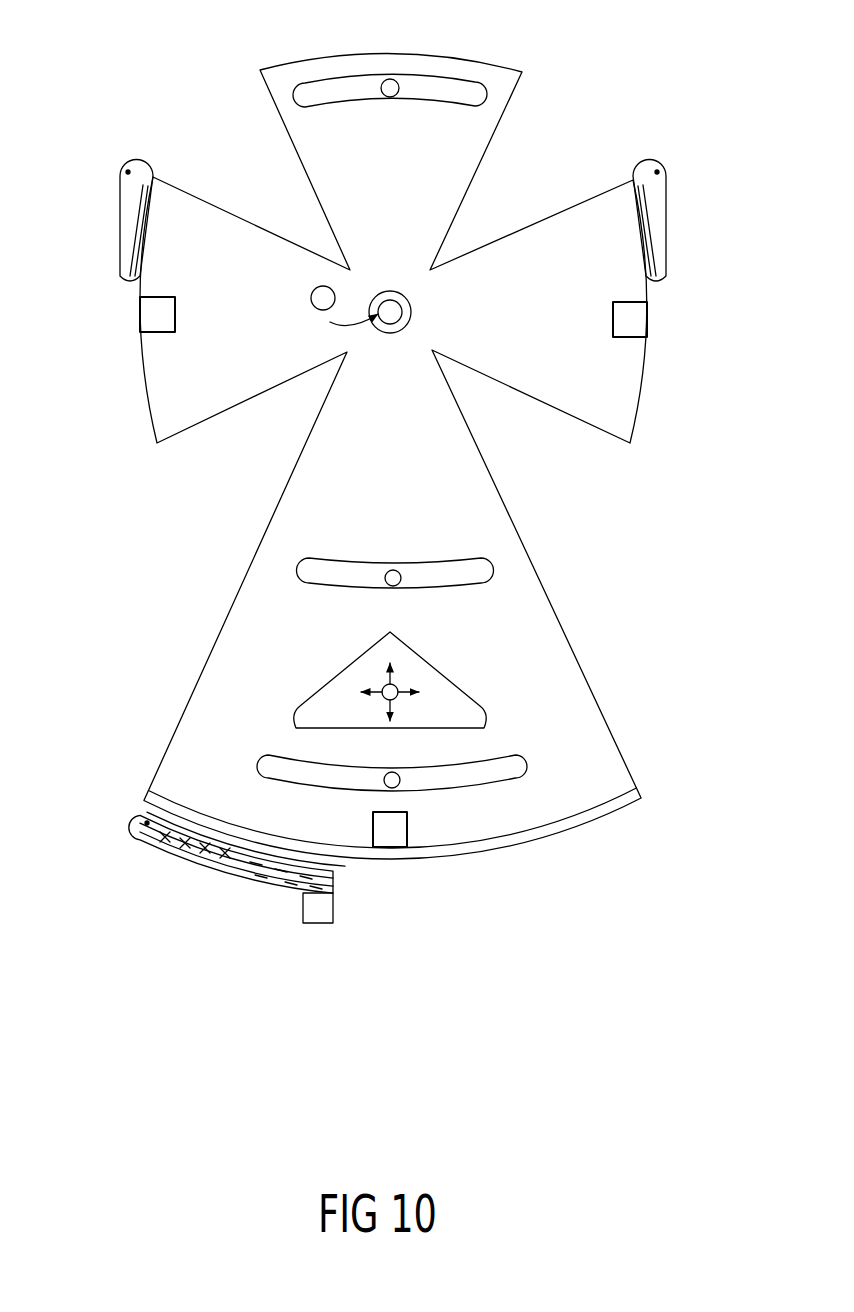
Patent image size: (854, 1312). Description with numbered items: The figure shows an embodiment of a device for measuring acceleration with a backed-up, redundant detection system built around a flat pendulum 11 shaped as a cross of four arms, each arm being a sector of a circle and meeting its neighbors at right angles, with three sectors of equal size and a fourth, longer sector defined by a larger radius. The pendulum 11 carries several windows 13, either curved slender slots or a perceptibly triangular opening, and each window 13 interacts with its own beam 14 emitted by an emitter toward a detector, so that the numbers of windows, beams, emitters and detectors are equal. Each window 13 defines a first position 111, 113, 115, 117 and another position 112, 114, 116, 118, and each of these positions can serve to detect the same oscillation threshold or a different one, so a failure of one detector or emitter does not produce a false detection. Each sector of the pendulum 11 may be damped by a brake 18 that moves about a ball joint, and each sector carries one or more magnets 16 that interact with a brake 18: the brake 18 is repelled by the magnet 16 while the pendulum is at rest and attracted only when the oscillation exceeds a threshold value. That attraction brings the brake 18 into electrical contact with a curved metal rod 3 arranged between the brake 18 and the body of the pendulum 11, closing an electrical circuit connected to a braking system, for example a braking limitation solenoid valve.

The curved metal rod 3 is at (345, 866).
The pendulum 11 is at (509, 522).
The window 13 is at (322, 96).
The beam 14 is at (404, 72).
The magnet 16 is at (393, 573).
The brake 18 is at (80, 908).
The first position 111 is at (529, 767).
The other position 112 is at (248, 762).
The first position 113 is at (462, 682).
The other position 114 is at (316, 672).
The first position 115 is at (495, 562).
The other position 116 is at (291, 557).
The first position 117 is at (492, 90).
The other position 118 is at (288, 98).